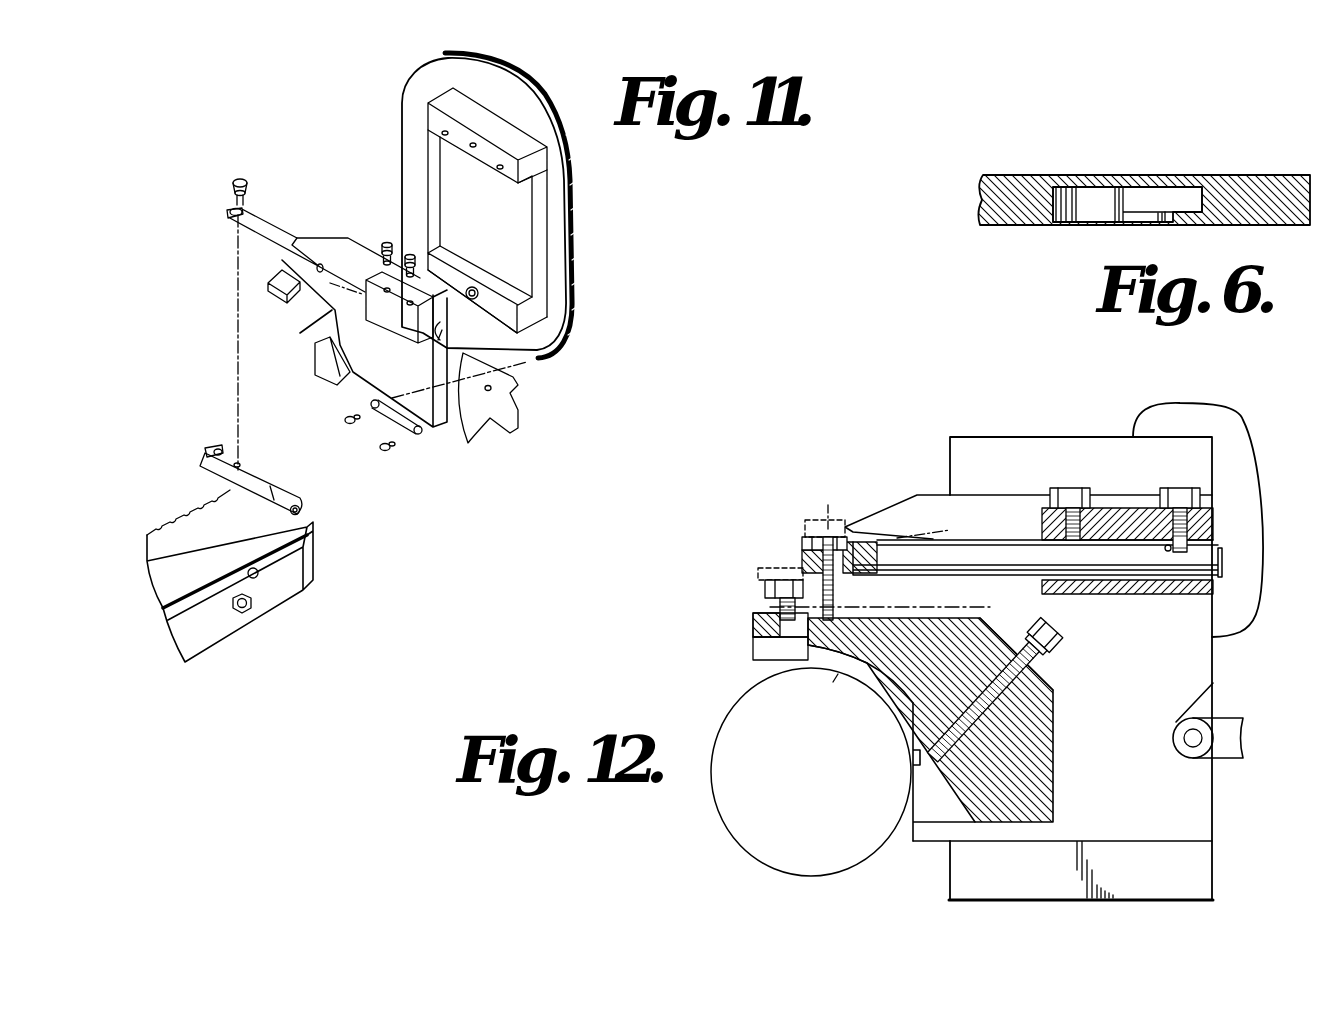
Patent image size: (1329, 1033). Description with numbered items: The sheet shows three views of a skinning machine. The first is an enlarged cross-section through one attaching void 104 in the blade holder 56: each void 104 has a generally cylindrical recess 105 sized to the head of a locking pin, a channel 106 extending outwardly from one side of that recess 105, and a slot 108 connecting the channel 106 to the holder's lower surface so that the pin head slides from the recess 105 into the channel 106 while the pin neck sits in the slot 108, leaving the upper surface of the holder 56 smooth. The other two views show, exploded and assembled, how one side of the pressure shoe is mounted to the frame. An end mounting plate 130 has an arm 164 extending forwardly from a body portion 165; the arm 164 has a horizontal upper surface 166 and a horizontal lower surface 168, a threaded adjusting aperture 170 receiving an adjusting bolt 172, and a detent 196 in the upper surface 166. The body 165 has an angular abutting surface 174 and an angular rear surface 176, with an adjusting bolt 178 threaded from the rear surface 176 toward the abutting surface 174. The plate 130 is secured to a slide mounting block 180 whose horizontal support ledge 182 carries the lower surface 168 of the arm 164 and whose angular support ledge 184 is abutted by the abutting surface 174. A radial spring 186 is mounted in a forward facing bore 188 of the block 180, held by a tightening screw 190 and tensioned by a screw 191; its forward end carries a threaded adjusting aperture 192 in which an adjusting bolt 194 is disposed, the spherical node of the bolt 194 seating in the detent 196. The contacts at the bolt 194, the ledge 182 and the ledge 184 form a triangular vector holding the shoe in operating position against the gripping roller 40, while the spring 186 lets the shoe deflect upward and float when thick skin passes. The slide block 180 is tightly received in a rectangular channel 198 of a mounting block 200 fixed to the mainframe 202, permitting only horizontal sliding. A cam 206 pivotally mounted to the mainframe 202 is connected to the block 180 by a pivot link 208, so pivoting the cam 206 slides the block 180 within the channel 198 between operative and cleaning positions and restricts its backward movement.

In FIG. 12, the gripping roller 40 is at (735, 852).
In FIG. 6, the blade holder 56 is at (1181, 173).
In FIG. 6, the attaching void 104 is at (1040, 238).
In FIG. 6, the cylindrical recess 105 is at (1083, 216).
In FIG. 6, the channel 106 is at (1147, 198).
In FIG. 6, the slot 108 is at (1152, 215).
In FIG. 11, the end mounting plate 130 is at (333, 540).
In FIG. 12, the end mounting plate 130 is at (964, 720).
In FIG. 11, the arm 164 is at (203, 463).
In FIG. 12, the arm 164 is at (768, 632).
In FIG. 12, the body portion 165 is at (1048, 752).
In FIG. 11, the upper surface 166 is at (255, 482).
In FIG. 12, the upper surface 166 is at (910, 618).
In FIG. 12, the lower surface 168 is at (817, 687).
In FIG. 12, the threaded adjusting aperture 170 is at (775, 606).
In FIG. 11, the adjusting bolt 172 is at (218, 448).
In FIG. 12, the adjusting bolt 172 is at (758, 590).
In FIG. 12, the abutting surface 174 is at (913, 773).
In FIG. 11, the rear surface 176 is at (282, 493).
In FIG. 12, the rear surface 176 is at (1053, 700).
In FIG. 11, the adjusting bolt 178 is at (302, 510).
In FIG. 12, the adjusting bolt 178 is at (1060, 655).
In FIG. 11, the slide mounting block 180 is at (441, 435).
In FIG. 12, the slide mounting block 180 is at (1217, 806).
In FIG. 11, the horizontal support ledge 182 is at (290, 300).
In FIG. 12, the horizontal support ledge 182 is at (760, 648).
In FIG. 11, the angular support ledge 184 is at (320, 368).
In FIG. 12, the angular support ledge 184 is at (928, 808).
In FIG. 11, the radial spring 186 is at (268, 230).
In FIG. 12, the radial spring 186 is at (952, 552).
In FIG. 11, the bore 188 is at (410, 346).
In FIG. 12, the bore 188 is at (1190, 594).
In FIG. 11, the tightening screw 190 is at (410, 252).
In FIG. 12, the tightening screw 190 is at (1172, 488).
In FIG. 11, the screw 191 is at (384, 242).
In FIG. 12, the screw 191 is at (1088, 488).
In FIG. 11, the threaded adjusting aperture 192 is at (230, 211).
In FIG. 12, the threaded adjusting aperture 192 is at (822, 520).
In FIG. 11, the adjusting bolt 194 is at (240, 178).
In FIG. 12, the adjusting bolt 194 is at (800, 538).
In FIG. 11, the detent 196 is at (240, 462).
In FIG. 12, the detent 196 is at (832, 618).
In FIG. 11, the rectangular channel 198 is at (486, 282).
In FIG. 12, the rectangular channel 198 is at (1026, 498).
In FIG. 11, the mounting block 200 is at (403, 100).
In FIG. 12, the mounting block 200 is at (950, 437).
In FIG. 11, the mainframe 202 is at (498, 72).
In FIG. 12, the mainframe 202 is at (1246, 436).
In FIG. 11, the cam 206 is at (490, 407).
In FIG. 11, the pivot link 208 is at (420, 436).
In FIG. 12, the pivot link 208 is at (1226, 722).